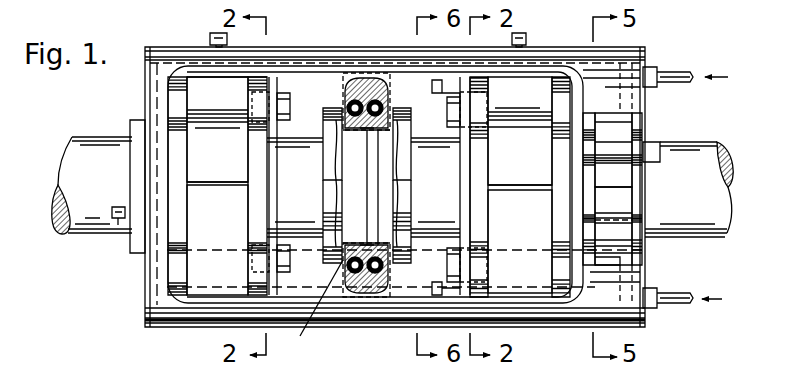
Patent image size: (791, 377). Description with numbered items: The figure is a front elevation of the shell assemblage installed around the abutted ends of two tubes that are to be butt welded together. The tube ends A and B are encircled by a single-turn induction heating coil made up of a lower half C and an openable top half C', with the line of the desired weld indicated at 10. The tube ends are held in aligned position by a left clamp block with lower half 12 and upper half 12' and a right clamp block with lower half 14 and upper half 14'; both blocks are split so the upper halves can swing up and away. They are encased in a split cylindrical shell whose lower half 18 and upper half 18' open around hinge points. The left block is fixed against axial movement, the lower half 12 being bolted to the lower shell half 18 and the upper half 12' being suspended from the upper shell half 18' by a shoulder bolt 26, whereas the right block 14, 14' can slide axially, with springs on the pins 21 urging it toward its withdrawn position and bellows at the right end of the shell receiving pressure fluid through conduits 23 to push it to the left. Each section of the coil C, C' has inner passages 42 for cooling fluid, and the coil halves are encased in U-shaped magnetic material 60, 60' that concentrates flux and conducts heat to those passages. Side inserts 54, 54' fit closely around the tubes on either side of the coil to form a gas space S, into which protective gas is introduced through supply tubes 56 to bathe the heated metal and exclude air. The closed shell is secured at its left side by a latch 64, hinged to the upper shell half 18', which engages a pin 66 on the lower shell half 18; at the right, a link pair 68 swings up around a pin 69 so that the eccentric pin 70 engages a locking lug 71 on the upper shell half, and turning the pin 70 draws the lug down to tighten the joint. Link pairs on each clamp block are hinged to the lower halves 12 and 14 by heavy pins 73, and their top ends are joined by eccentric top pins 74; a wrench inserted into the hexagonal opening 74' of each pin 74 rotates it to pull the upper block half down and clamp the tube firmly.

The upper shell half 18' is at (395, 173).
The lower shell half 18 is at (395, 331).
The shoulder bolt 26 is at (212, 37).
The top pin 74 is at (337, 63).
The latch 64 is at (130, 127).
The pin 66 is at (119, 222).
The heavy pin 73 is at (205, 288).
The upper half of left clamp block 12' is at (217, 129).
The lower half of left clamp block 12 is at (217, 238).
The hexagonal opening 74' is at (369, 183).
The inner passages 42 is at (347, 100).
The openable top half of inductor coil C' is at (382, 103).
The pin 21 is at (448, 86).
The tube end A is at (62, 176).
The side insert 54' is at (367, 144).
The magnetic material 60' is at (365, 150).
The gas space S is at (383, 130).
The line of butt welding 10 is at (366, 166).
The side insert 54 is at (365, 221).
The magnetic material 60 is at (366, 227).
The tube end B is at (733, 176).
The supply tube 56 is at (310, 317).
The lower half of inductor coil C is at (376, 310).
The conduit 23 is at (669, 72).
The locking lug 71 is at (625, 131).
The pin 70 is at (655, 150).
The link pair 68 is at (636, 199).
The pin 69 is at (637, 235).
The upper half of right clamp block 14' is at (520, 131).
The lower half of right clamp block 14 is at (520, 239).